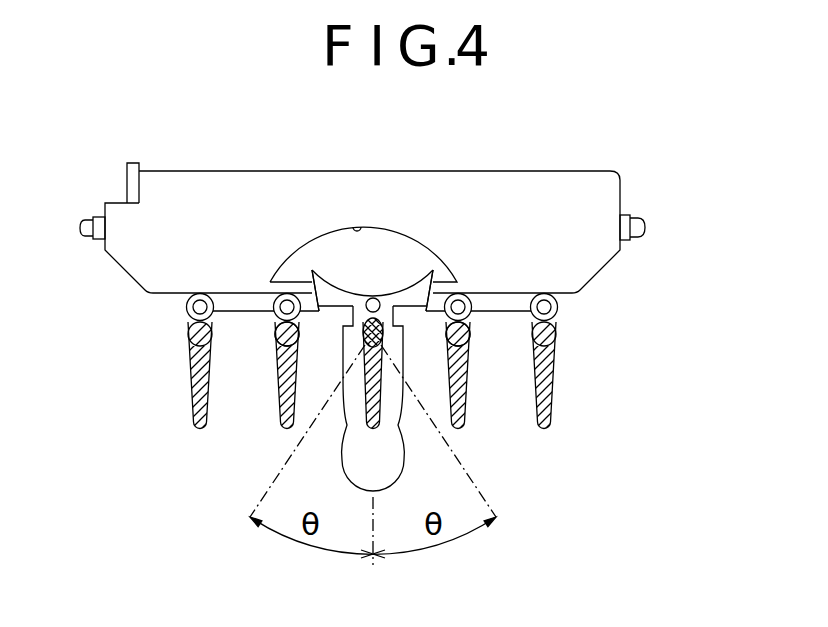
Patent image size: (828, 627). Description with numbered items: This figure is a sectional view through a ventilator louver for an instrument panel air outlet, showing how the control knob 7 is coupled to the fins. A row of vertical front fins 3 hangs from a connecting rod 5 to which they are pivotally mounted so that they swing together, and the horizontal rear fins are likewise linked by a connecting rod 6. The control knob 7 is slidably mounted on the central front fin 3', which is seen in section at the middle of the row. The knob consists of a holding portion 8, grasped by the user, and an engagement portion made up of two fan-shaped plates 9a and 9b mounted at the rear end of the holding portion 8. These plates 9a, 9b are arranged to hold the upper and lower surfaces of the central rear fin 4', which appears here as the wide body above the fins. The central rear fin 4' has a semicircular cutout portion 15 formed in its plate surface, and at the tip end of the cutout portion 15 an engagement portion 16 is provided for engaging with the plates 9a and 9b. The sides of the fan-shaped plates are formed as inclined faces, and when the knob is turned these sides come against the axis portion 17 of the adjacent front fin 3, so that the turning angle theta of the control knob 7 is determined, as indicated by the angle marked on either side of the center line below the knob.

The front fin 3 is at (376, 378).
The central front fin 3' is at (399, 386).
The central rear fin 4' is at (362, 195).
The connecting rod 5 is at (558, 310).
The connecting rod 6 is at (125, 168).
The control knob 7 is at (345, 455).
The holding portion 8 is at (359, 483).
The plate 9a is at (405, 260).
The plate 9b is at (372, 290).
The semicircular cutout portion 15 is at (360, 226).
The engagement portion 16 is at (295, 283).
The axis portion 17 is at (276, 338).